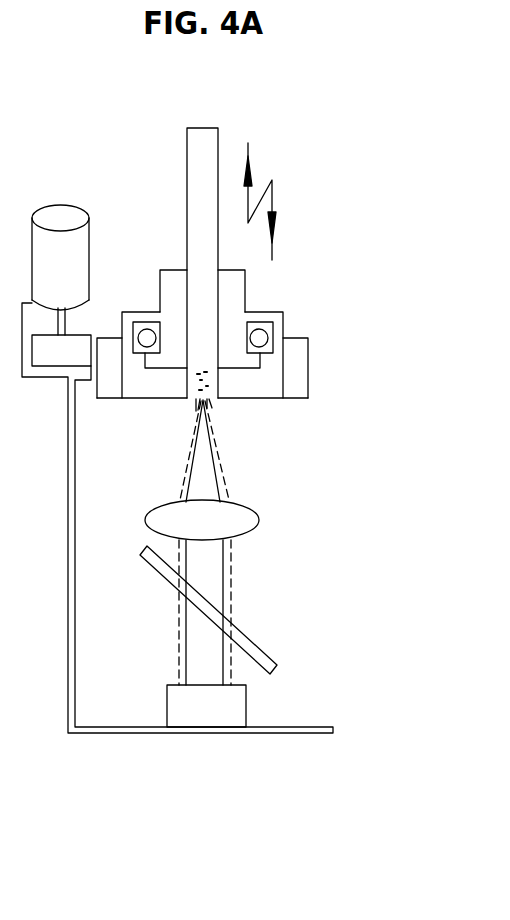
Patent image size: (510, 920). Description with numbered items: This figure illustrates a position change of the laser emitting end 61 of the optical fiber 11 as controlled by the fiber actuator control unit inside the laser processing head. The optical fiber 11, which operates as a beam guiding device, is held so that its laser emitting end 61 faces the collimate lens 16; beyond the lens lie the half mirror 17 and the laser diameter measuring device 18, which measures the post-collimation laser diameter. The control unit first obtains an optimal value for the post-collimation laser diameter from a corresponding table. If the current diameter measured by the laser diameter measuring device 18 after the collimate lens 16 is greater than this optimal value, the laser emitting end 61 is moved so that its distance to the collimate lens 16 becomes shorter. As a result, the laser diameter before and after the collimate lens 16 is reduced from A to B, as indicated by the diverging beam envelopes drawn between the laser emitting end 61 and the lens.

The optical fiber 11 is at (185, 158).
The laser emitting end 61 is at (217, 408).
The laser diameter before position change A is at (182, 467).
The laser diameter after position change B is at (217, 467).
The collimate lens 16 is at (253, 532).
The half mirror 17 is at (153, 567).
The laser diameter measuring device 18 is at (212, 720).